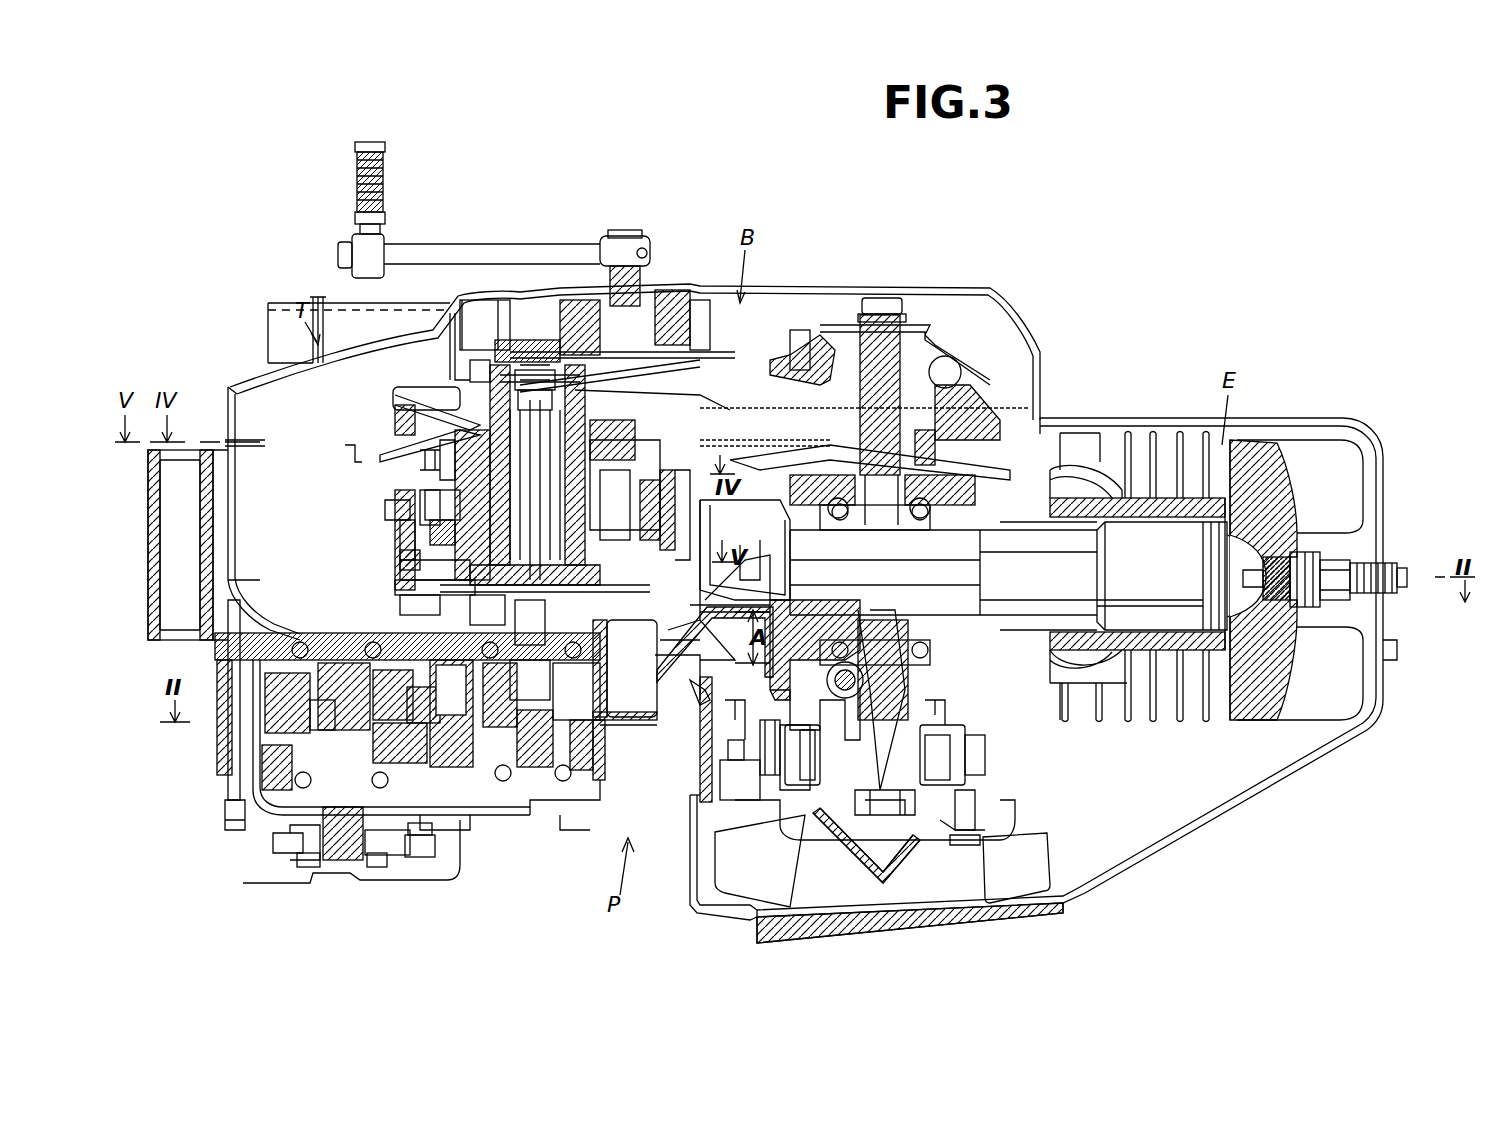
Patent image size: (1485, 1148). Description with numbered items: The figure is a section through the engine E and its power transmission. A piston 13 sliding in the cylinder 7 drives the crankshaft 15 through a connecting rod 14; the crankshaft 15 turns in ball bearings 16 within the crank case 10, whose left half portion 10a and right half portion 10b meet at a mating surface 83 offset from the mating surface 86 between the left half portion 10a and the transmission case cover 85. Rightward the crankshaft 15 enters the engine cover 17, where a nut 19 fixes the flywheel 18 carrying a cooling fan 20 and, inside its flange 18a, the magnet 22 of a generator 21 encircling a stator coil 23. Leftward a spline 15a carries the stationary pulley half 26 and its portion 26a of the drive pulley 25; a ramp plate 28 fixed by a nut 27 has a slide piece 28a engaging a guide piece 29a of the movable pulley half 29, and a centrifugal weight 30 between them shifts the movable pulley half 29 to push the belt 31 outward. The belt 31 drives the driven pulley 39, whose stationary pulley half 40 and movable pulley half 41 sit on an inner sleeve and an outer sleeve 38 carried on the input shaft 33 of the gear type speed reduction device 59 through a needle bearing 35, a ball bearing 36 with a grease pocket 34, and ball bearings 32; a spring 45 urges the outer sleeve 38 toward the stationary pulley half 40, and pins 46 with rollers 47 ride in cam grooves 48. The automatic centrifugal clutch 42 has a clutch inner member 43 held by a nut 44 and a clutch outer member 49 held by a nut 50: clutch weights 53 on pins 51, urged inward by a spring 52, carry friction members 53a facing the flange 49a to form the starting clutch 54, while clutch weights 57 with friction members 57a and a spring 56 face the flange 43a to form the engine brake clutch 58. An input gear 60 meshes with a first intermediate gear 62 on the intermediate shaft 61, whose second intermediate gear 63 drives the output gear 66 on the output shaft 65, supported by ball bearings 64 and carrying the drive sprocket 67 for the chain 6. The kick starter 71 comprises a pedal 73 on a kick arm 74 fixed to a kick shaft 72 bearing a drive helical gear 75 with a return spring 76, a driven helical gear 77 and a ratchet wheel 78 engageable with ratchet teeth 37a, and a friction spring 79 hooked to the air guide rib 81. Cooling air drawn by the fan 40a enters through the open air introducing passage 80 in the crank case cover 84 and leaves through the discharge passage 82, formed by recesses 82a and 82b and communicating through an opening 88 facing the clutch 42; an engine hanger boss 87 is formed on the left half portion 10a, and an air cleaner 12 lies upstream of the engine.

The chain 6 is at (405, 860).
The cylinder 7 is at (1170, 500).
The crank case 10 is at (772, 514).
The left half portion 10a is at (845, 490).
The right half portion 10b is at (815, 650).
The air cleaner 12 is at (1325, 579).
The piston 13 is at (1160, 585).
The connecting rod 14 is at (1035, 585).
The crankshaft 15 is at (892, 498).
The spline 15a is at (860, 425).
The ball bearings 16 is at (836, 532).
The engine cover 17 is at (1195, 835).
The flywheel 18 is at (823, 820).
The flange 18a is at (760, 795).
The nut 19 is at (890, 820).
The fan 20 is at (1045, 855).
The generator 21 is at (840, 725).
The magnet 22 is at (790, 735).
The stator coil 23 is at (805, 760).
The drive pulley 25 is at (990, 438).
The stationary pulley half 26 is at (951, 442).
The fan blade 26a is at (865, 427).
The nut 27 is at (885, 300).
The ramp plate 28 is at (940, 300).
The slide piece 28a is at (775, 360).
The movable pulley half 29 is at (967, 412).
The guide piece 29a is at (790, 330).
The centrifugal weight 30 is at (955, 365).
The belt 31 is at (760, 434).
The ball bearings 32 is at (585, 780).
The input shaft 33 is at (545, 562).
The grease pocket 34 is at (535, 485).
The needle bearing 35 is at (527, 490).
The ball bearing 36 is at (537, 465).
The ratchet teeth 37a is at (625, 386).
The outer sleeve 38 is at (455, 480).
The driven pulley 39 is at (330, 385).
The stationary pulley half 40 is at (383, 395).
The fan 40a is at (415, 390).
The movable pulley half 41 is at (385, 445).
The automatic centrifugal clutch 42 is at (384, 500).
The clutch inner member 43 is at (365, 560).
The flange 43a is at (400, 575).
The nut 44 is at (629, 485).
The spring 45 is at (470, 527).
The pins 46 is at (531, 485).
The roller 47 is at (600, 490).
The cam grooves 48 is at (623, 445).
The clutch outer member 49 is at (710, 655).
The flange 49a is at (695, 515).
The nut 50 is at (536, 623).
The pin 51 is at (661, 507).
The spring 52 is at (575, 705).
The clutch weights 53 is at (425, 462).
The friction member 53a is at (390, 512).
The starting clutch 54 is at (400, 535).
The spring 56 is at (494, 616).
The clutch weights 57 is at (410, 630).
The friction member 57a is at (400, 595).
The engine brake clutch 58 is at (750, 615).
The gear type speed reduction device 59 is at (452, 838).
The input gear 60 is at (611, 750).
The intermediate shaft 61 is at (451, 713).
The first intermediate gear 62 is at (380, 745).
The second intermediate gear 63 is at (518, 713).
The ball bearings 64 is at (300, 660).
The output shaft 65 is at (365, 698).
The output gear 66 is at (298, 716).
The drive sprocket 67 is at (275, 852).
The kick starter 71 is at (567, 205).
The kick shaft 72 is at (622, 300).
The pedal 73 is at (385, 185).
The kick arm 74 is at (500, 250).
The drive helical gear 75 is at (690, 360).
The return spring 76 is at (700, 305).
The driven helical gear 77 is at (498, 345).
The ratchet wheel 78 is at (490, 370).
The friction spring 79 is at (475, 380).
The open air introducing passage 80 is at (268, 322).
The air guide rib 81 is at (455, 347).
The discharge passage 82 is at (640, 720).
The recess 82a is at (680, 655).
The recess 82b is at (638, 752).
The mating surface 83 is at (805, 560).
The crank case cover 84 is at (800, 288).
The transmission case cover 85 is at (582, 795).
The mating surface 86 is at (682, 695).
The engine hanger boss 87 is at (148, 515).
The opening 88 is at (628, 670).
The engine E is at (1296, 580).